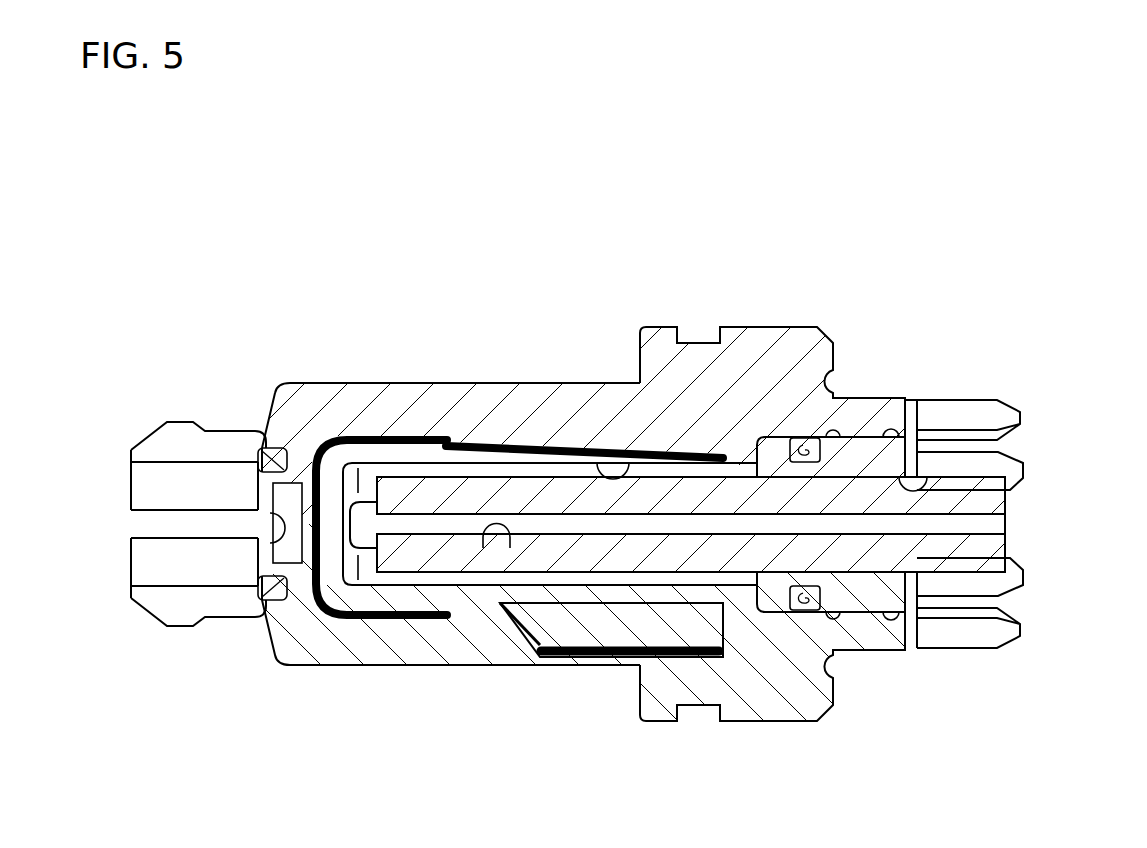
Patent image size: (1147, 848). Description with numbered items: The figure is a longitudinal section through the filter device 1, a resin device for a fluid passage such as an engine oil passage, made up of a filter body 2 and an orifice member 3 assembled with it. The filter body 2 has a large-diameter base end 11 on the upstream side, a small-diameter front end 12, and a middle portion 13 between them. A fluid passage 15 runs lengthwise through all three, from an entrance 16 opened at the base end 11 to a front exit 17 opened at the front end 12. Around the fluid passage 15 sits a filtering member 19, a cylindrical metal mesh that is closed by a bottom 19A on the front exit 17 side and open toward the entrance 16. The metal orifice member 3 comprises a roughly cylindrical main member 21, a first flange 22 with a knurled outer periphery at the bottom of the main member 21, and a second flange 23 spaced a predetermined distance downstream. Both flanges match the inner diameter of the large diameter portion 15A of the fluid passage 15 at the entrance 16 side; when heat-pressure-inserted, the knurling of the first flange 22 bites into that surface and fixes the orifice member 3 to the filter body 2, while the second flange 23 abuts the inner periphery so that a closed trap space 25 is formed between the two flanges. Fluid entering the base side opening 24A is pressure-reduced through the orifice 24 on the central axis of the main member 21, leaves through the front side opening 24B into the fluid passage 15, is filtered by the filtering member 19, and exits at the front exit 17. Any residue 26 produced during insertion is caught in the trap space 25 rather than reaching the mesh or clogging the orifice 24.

The filter device 1 is at (593, 488).
The filter body 2 is at (760, 708).
The orifice member 3 is at (1054, 559).
The base end 11 is at (772, 341).
The front end 12 is at (209, 484).
The middle portion 13 is at (583, 504).
The fluid passage 15 is at (691, 410).
The large diameter portion 15A is at (879, 367).
The entrance 16 is at (973, 494).
The front exit 17 is at (171, 527).
The filtering member 19 is at (550, 437).
The bottom 19A is at (254, 434).
The main member 21 is at (519, 447).
The first flange 22 is at (881, 689).
The second flange 23 is at (816, 688).
The orifice 24 is at (691, 634).
The base side opening 24A is at (1067, 511).
The front side opening 24B is at (306, 629).
The trap space 25 is at (831, 613).
The residue 26 is at (830, 529).